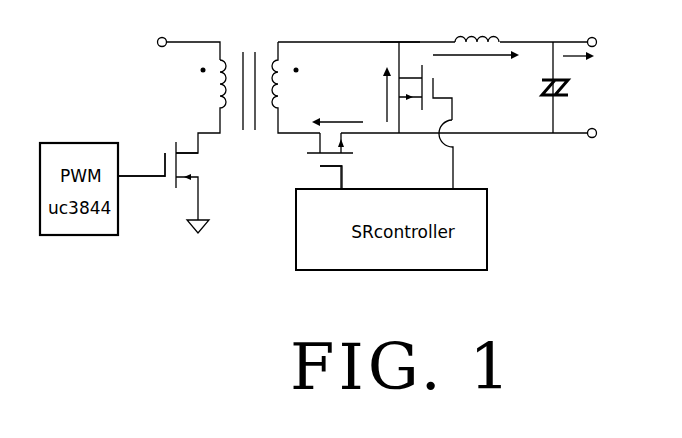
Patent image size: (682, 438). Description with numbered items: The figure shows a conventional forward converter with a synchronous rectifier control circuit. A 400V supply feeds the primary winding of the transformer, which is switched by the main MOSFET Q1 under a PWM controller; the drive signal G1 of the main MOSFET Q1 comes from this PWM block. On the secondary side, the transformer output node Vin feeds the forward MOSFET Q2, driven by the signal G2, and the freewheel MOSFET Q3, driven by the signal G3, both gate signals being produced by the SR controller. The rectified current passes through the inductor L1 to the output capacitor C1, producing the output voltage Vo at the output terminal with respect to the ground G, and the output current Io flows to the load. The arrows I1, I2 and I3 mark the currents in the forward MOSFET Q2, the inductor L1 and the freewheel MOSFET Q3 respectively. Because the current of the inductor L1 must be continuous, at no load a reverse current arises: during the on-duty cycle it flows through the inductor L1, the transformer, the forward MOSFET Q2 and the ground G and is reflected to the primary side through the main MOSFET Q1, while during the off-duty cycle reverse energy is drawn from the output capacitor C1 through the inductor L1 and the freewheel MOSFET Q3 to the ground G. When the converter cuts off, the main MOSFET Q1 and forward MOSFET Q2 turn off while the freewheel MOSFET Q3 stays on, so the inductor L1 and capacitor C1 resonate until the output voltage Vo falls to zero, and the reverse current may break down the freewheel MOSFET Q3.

The 400V input voltage terminal 400V is at (162, 47).
The main MOSFET Q1 is at (195, 187).
The forward MOSFET Q2 is at (309, 161).
The freewheel MOSFET Q3 is at (425, 97).
The drive signal of main MOSFET G1 is at (124, 173).
The drive signal of forward MOSFET G2 is at (352, 172).
The drive signal of freewheel MOSFET G3 is at (460, 170).
The input voltage Vin is at (390, 36).
The inductor L1 is at (476, 21).
The output capacitor C1 is at (542, 87).
The current through Q2 I1 is at (337, 115).
The current through L1 I2 is at (476, 64).
The current through Q3 I3 is at (376, 94).
The output current Io is at (578, 65).
The output voltage Vo is at (605, 43).
The ground G is at (603, 134).